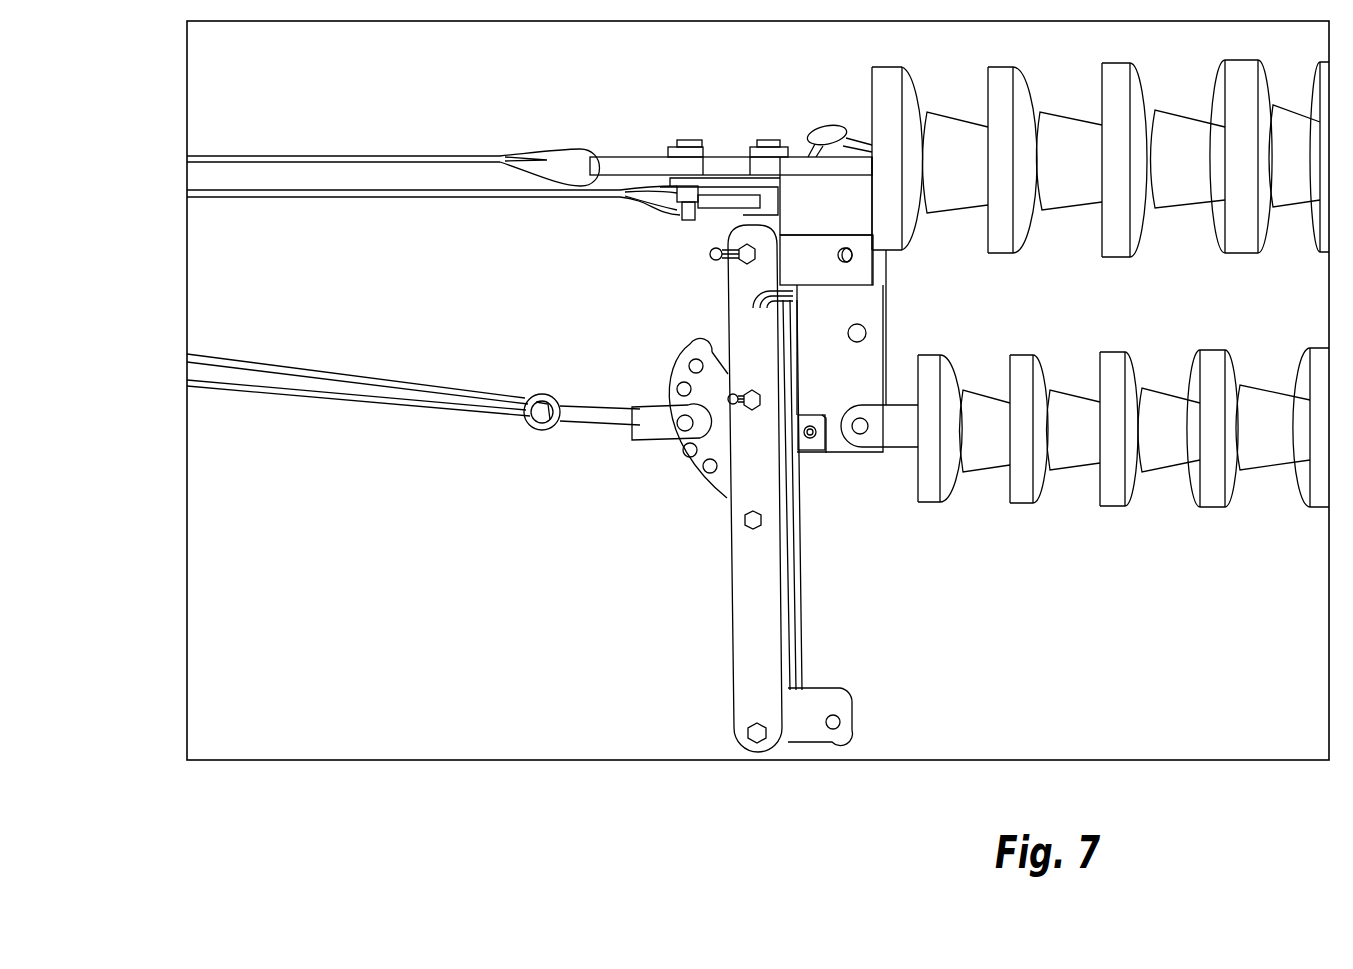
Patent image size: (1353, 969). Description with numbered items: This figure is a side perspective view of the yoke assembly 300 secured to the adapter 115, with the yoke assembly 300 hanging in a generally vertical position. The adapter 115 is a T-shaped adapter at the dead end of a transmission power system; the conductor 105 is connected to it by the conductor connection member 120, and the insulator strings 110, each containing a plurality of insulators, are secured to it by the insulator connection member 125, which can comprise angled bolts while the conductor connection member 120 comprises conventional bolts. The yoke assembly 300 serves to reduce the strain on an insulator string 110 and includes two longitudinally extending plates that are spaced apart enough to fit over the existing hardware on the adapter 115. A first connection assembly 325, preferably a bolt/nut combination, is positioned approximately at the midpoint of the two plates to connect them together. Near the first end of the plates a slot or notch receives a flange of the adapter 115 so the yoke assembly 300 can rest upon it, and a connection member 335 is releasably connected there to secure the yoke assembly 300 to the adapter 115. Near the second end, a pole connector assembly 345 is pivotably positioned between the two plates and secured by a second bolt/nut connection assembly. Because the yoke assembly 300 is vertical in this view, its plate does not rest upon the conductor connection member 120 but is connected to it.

The conductor 105 is at (370, 163).
The insulator string 110 is at (1190, 400).
The adapter 115 is at (847, 313).
The conductor connection member 120 is at (727, 377).
The insulator connection member 125 is at (893, 428).
The yoke assembly 300 is at (747, 611).
The first connection assembly 325 is at (741, 552).
The connection member 335 is at (800, 248).
The pole connector assembly 345 is at (830, 700).